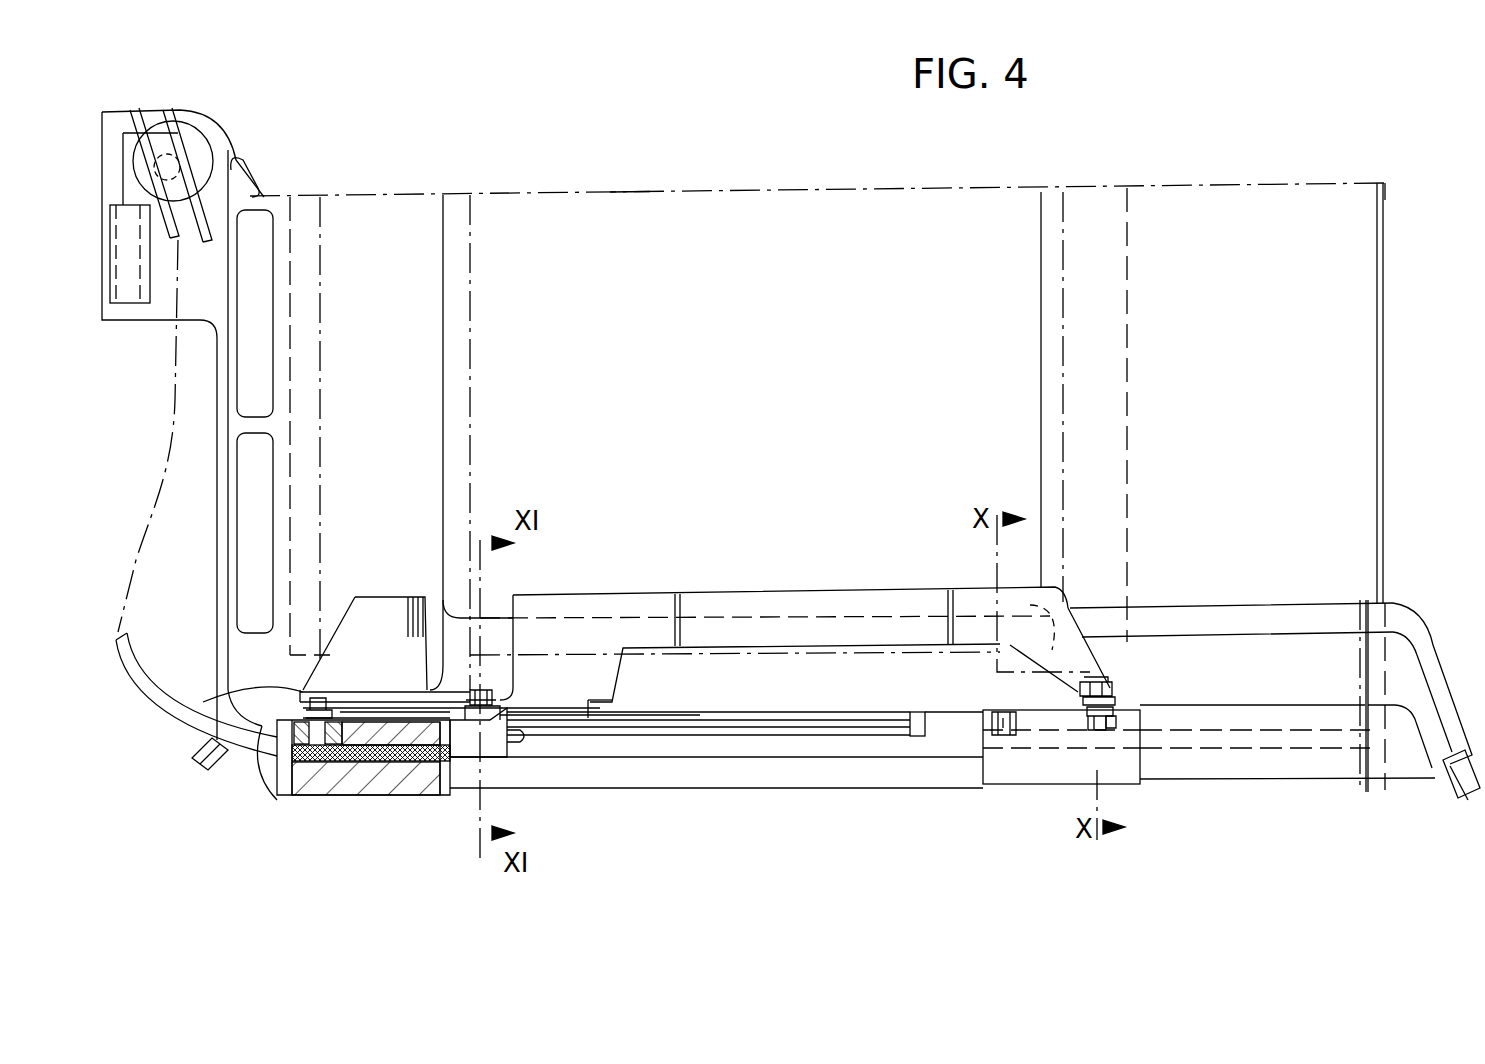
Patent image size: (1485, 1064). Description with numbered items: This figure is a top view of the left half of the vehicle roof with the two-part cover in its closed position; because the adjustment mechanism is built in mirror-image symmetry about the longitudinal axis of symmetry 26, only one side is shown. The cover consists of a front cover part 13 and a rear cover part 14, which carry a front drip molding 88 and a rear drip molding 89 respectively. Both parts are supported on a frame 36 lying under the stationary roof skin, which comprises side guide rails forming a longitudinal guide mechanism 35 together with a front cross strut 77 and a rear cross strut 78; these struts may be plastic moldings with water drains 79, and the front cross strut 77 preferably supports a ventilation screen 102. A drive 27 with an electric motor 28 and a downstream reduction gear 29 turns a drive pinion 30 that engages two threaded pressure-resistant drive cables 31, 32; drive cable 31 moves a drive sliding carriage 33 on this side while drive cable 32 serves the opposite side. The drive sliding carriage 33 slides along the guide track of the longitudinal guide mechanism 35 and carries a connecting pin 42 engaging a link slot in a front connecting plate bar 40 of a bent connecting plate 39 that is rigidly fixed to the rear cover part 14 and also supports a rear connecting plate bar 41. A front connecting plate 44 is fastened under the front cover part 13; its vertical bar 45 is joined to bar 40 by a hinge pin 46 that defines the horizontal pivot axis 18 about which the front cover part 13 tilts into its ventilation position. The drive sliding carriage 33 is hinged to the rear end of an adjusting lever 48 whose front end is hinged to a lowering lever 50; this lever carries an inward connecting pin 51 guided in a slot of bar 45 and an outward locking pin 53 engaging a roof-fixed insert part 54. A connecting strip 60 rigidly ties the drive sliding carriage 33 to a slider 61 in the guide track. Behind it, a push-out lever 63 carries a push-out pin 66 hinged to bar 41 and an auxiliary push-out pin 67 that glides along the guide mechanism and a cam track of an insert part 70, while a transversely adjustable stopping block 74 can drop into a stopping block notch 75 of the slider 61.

The front cover part 13 is at (388, 206).
The rear cover part 14 is at (658, 192).
The horizontal pivot axis 18 is at (482, 762).
The longitudinal axis of symmetry 26 is at (798, 190).
The drive 27 is at (235, 153).
The electric motor 28 is at (130, 284).
The reduction gear 29 is at (180, 132).
The drive pinion 30 is at (170, 166).
The drive cable 31 is at (134, 122).
The drive cable 32 is at (194, 120).
The drive sliding carriage 33 is at (502, 718).
The longitudinal guide mechanism 35 is at (1258, 764).
The frame 36 is at (1250, 180).
The bent connecting plate 39 is at (777, 592).
The front connecting plate bar 40 is at (610, 710).
The rear connecting plate bar 41 is at (1115, 670).
The connecting pin 42 is at (550, 720).
The front connecting plate 44 is at (386, 600).
The vertical bar 45 is at (318, 697).
The hinge pin 46 is at (474, 692).
The adjusting lever 48 is at (430, 742).
The lowering lever 50 is at (275, 792).
The connecting pin 51 is at (212, 693).
The locking pin 53 is at (308, 790).
The insert part 54 is at (346, 762).
The connecting strip 60 is at (726, 748).
The slider 61 is at (966, 740).
The push-out lever 63 is at (1116, 695).
The push-out pin 66 is at (1090, 730).
The auxiliary push-out pin 67 is at (1114, 728).
The insert part 70 is at (1033, 779).
The stopping block 74 is at (1008, 742).
The stopping block notch 75 is at (920, 744).
The front cross strut 77 is at (218, 472).
The rear cross strut 78 is at (1382, 546).
The water drain 79 is at (198, 768).
The front drip molding 88 is at (296, 206).
The rear drip molding 89 is at (1088, 194).
The ventilation screen 102 is at (254, 550).